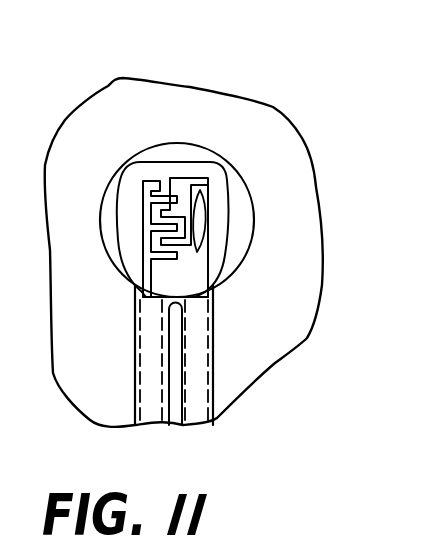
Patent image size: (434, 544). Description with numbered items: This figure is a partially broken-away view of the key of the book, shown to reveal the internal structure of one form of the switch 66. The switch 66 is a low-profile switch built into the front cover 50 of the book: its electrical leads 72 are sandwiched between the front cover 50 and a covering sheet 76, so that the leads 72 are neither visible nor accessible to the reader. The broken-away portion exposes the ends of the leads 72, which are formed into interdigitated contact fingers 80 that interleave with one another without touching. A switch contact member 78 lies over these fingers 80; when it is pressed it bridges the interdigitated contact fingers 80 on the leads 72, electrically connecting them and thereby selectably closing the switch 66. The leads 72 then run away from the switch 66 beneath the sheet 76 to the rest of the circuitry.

The switch 66 is at (180, 132).
The front cover 50 is at (228, 217).
The sheet 76 is at (290, 304).
The electrical leads 72 is at (155, 238).
The interdigitated contact fingers 80 is at (171, 211).
The switch contact member 78 is at (204, 199).